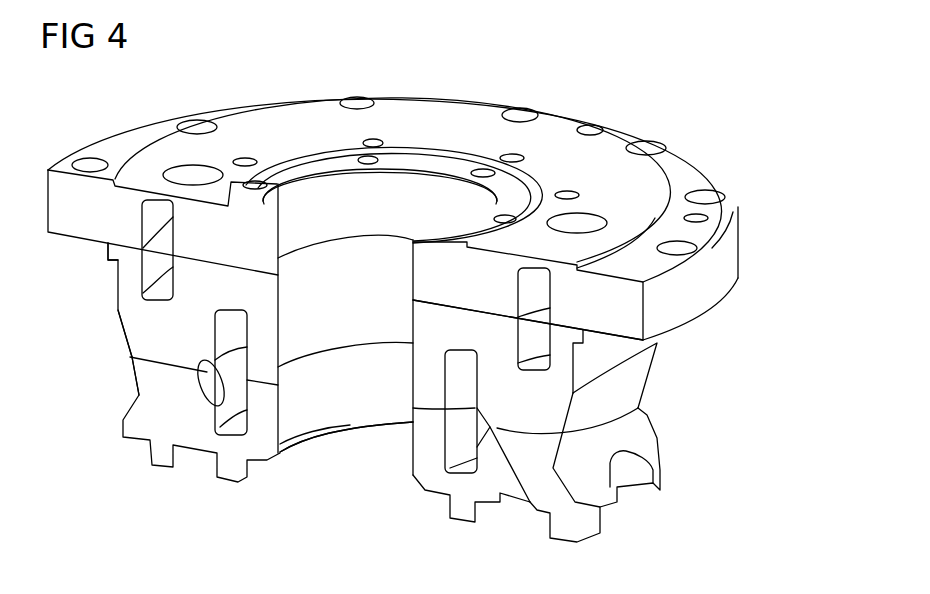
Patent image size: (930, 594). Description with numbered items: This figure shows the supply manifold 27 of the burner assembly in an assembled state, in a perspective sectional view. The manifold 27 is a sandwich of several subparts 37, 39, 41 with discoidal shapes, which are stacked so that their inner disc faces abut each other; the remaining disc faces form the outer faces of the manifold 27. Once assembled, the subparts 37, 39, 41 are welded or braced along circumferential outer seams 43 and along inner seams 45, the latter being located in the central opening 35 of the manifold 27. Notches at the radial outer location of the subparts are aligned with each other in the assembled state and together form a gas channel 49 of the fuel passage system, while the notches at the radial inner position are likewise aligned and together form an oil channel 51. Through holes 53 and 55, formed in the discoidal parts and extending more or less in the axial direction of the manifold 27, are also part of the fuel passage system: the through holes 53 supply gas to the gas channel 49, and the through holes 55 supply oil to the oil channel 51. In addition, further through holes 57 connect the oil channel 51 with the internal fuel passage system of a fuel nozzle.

The supply manifold 27 is at (682, 116).
The central opening 35 is at (334, 452).
The subpart 37 is at (741, 246).
The subpart 39 is at (659, 372).
The subpart 41 is at (669, 441).
The circumferential outer seam 43 is at (110, 250).
The inner seam 45 is at (300, 250).
The gas channel 49 is at (143, 269).
The oil channel 51 is at (223, 413).
The through holes 53 is at (180, 170).
The through holes 55 is at (477, 172).
The further through holes 57 is at (498, 466).